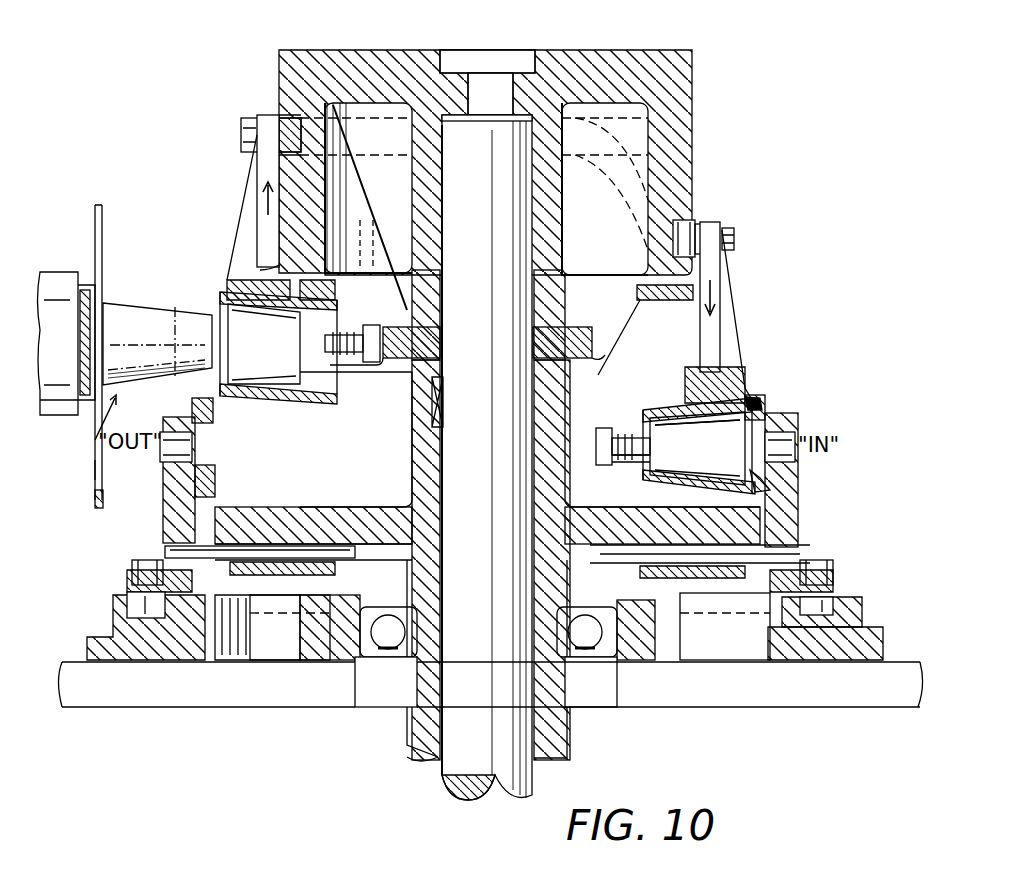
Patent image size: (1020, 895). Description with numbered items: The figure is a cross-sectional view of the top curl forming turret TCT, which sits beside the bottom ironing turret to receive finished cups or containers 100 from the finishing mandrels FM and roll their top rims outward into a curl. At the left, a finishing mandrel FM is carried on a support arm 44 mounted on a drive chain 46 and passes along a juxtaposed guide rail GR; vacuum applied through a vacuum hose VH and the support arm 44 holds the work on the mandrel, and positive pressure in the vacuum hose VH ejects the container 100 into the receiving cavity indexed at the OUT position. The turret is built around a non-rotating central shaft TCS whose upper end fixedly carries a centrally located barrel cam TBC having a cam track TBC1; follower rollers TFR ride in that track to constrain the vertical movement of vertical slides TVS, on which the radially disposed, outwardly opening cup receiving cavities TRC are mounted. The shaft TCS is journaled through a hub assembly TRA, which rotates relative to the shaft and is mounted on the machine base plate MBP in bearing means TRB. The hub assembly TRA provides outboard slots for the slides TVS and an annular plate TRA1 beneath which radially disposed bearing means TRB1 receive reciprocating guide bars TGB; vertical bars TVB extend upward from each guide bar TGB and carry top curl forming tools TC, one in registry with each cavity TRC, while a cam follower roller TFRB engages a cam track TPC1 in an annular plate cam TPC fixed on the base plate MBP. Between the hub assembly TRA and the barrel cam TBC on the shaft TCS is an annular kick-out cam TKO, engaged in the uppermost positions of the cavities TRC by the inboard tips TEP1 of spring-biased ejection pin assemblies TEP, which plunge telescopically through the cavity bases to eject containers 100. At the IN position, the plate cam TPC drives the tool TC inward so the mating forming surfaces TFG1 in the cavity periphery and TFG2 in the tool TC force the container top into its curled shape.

The barrel cam TBC is at (575, 50).
The cam track TBC1 is at (410, 118).
The central shaft TCS is at (510, 676).
The kick-out cam TKO is at (425, 320).
The follower rollers TFR is at (288, 125).
The vertical slides TVS is at (262, 245).
The ejection pin assemblies TEP is at (362, 330).
The inboard tips TEP1 is at (430, 360).
The hub assembly TRA is at (612, 332).
The cup receiving cavities TRC is at (310, 386).
The containers 100 is at (180, 305).
The vacuum hoses VH is at (102, 222).
The guide rail GR is at (85, 286).
The finishing mandrels FM is at (92, 440).
The support arms 44 is at (95, 468).
The drive chain 46 is at (95, 498).
The top curl forming tools TC is at (192, 408).
The vertical bars TVB is at (150, 480).
The top curl forming surface TFG1 is at (755, 392).
The top curl forming surface TFG2 is at (210, 480).
The top curl forming turret TCT is at (899, 464).
The annular plate TRA1 is at (215, 528).
The guide bars TGB is at (760, 545).
The annular plate cam TPC is at (190, 650).
The cam follower roller TFRB is at (128, 607).
The cam track TPC1 is at (114, 600).
The bearing means TRB1 is at (300, 640).
The bearing means TRB is at (388, 650).
The machine base plate MBP is at (840, 690).